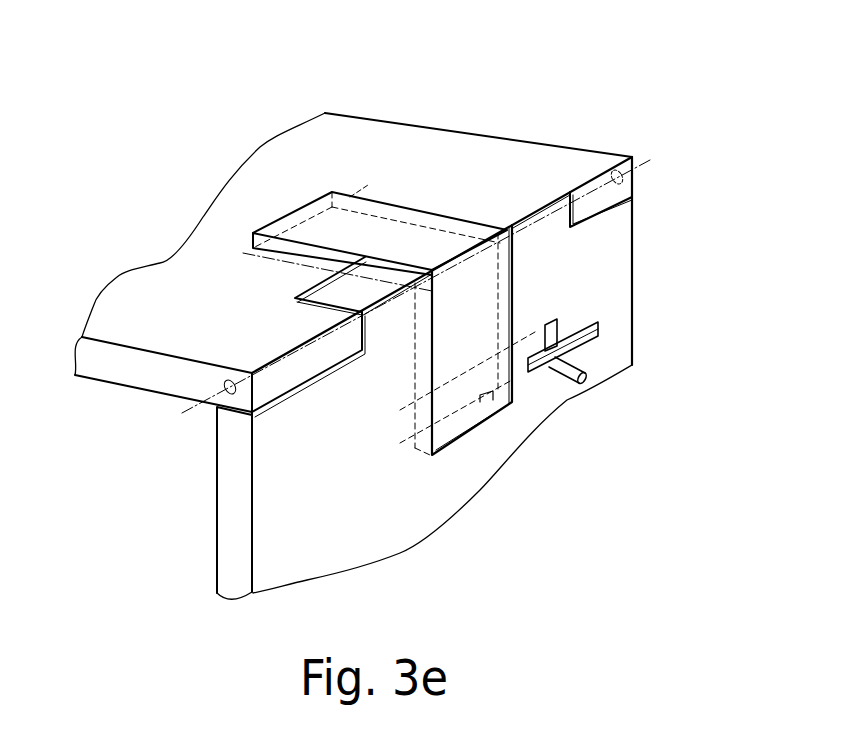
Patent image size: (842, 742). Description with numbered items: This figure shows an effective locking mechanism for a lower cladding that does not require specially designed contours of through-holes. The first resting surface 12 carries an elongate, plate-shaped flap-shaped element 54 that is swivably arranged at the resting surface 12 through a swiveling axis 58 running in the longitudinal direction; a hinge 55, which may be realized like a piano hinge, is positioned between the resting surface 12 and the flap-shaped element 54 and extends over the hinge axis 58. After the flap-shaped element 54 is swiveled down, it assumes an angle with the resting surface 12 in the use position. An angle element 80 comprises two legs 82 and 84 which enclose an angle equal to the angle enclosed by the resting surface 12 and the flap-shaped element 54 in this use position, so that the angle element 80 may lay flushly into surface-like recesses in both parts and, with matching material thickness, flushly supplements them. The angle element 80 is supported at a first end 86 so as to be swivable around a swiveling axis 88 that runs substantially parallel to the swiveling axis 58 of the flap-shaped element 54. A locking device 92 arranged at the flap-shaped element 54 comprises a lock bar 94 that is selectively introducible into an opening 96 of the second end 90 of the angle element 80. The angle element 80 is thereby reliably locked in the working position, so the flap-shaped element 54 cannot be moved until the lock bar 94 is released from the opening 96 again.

The resting surface 12 is at (330, 140).
The flap-shaped element 54 is at (623, 228).
The hinge 55 is at (640, 147).
The swiveling axis 58 is at (183, 415).
The angle element 80 is at (390, 220).
The leg 82 is at (315, 262).
The leg 84 is at (513, 277).
The first end 86 is at (295, 207).
The swiveling axis 88 is at (242, 253).
The second end 90 is at (420, 453).
The locking device 92 is at (610, 353).
The lock bar 94 is at (513, 380).
The opening 96 is at (512, 403).